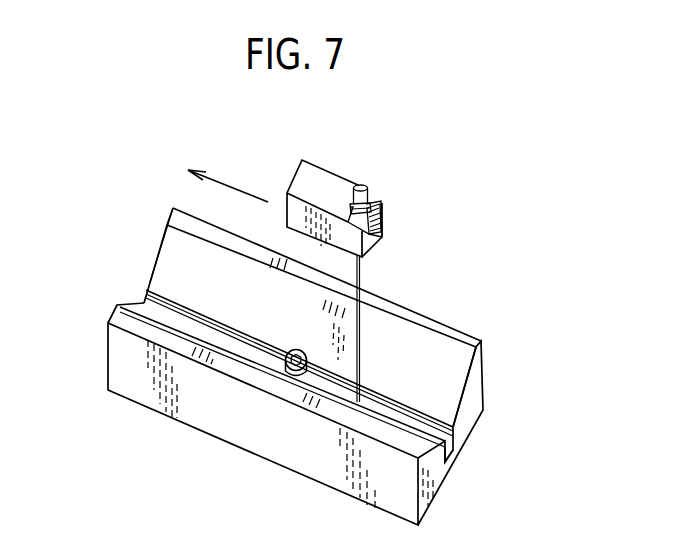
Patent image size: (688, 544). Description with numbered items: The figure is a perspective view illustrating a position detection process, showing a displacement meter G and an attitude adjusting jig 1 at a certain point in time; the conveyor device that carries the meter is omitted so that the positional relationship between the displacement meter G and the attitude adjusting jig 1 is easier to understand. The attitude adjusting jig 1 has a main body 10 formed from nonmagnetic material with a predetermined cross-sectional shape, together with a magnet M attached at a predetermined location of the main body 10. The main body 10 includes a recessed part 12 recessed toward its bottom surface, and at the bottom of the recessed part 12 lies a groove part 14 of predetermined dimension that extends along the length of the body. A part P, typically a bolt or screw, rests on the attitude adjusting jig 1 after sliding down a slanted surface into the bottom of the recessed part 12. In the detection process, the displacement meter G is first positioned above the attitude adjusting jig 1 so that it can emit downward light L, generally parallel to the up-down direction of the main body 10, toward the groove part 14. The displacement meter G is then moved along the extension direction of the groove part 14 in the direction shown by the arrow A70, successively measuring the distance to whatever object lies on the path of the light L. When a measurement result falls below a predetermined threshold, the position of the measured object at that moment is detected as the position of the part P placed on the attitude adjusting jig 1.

The attitude adjusting jig 1 is at (95, 363).
The main body 10 is at (472, 395).
The recessed part 12 is at (403, 364).
The groove part 14 is at (415, 414).
The magnet M is at (456, 456).
The part P is at (288, 337).
The light L is at (363, 270).
The displacement meter G is at (328, 192).
The arrow A70 is at (237, 186).